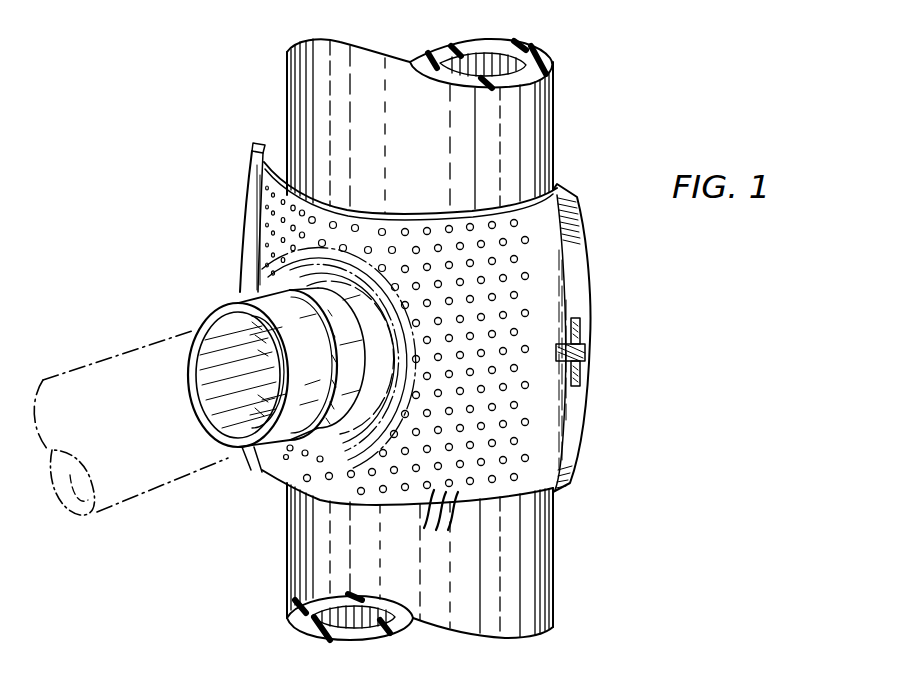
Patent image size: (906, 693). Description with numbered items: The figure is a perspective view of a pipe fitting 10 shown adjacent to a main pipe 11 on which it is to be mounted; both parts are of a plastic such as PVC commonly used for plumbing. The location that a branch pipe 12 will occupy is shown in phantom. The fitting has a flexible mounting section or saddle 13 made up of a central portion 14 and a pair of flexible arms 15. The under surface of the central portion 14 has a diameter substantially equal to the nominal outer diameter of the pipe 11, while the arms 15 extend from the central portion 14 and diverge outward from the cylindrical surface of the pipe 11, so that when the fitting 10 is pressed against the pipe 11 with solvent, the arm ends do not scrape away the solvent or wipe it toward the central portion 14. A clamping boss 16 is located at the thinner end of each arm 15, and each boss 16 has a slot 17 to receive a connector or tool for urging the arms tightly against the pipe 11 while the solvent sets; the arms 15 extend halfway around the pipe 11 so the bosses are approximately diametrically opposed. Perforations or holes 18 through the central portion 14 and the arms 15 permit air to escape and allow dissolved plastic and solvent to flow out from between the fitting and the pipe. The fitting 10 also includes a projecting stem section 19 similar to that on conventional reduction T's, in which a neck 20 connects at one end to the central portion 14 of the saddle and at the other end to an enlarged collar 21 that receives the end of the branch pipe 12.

The pipe fitting 10 is at (188, 247).
The main pipe 11 is at (296, 80).
The branch pipe 12 is at (107, 380).
The saddle 13 is at (417, 195).
The central portion 14 is at (357, 272).
The flexible arms 15 is at (300, 203).
The clamping boss 16 is at (257, 218).
The slot 17 is at (594, 352).
The perforations 18 is at (437, 526).
The stem section 19 is at (222, 292).
The neck 20 is at (343, 410).
The enlarged collar 21 is at (293, 441).